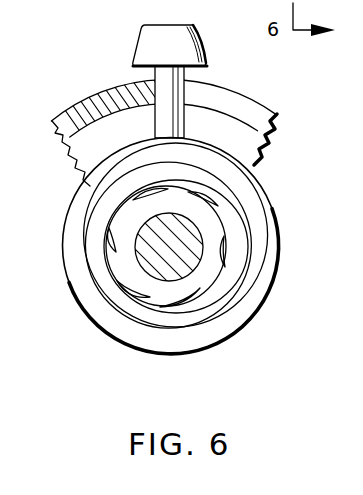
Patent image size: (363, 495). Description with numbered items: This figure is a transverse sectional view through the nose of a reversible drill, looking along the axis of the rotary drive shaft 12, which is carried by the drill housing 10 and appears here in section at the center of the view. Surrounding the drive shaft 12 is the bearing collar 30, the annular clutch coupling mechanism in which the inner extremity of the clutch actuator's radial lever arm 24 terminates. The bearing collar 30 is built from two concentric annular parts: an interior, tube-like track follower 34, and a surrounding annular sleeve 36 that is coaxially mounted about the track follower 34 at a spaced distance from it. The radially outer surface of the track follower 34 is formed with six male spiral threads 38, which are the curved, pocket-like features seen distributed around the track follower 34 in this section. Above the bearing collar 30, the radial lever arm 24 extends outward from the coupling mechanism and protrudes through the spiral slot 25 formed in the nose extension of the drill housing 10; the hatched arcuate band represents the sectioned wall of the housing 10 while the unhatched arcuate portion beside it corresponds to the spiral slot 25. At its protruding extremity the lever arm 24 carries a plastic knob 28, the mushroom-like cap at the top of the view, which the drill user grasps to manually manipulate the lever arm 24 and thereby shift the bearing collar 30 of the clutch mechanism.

The drill housing 10 is at (82, 105).
The rotary drive shaft 12 is at (188, 222).
The radial lever arm 24 is at (152, 127).
The spiral slot 25 is at (245, 106).
The plastic knob 28 is at (154, 45).
The bearing collar 30 is at (175, 259).
The track follower 34 is at (163, 294).
The annular sleeve 36 is at (253, 277).
The spiral threads 38 is at (203, 190).